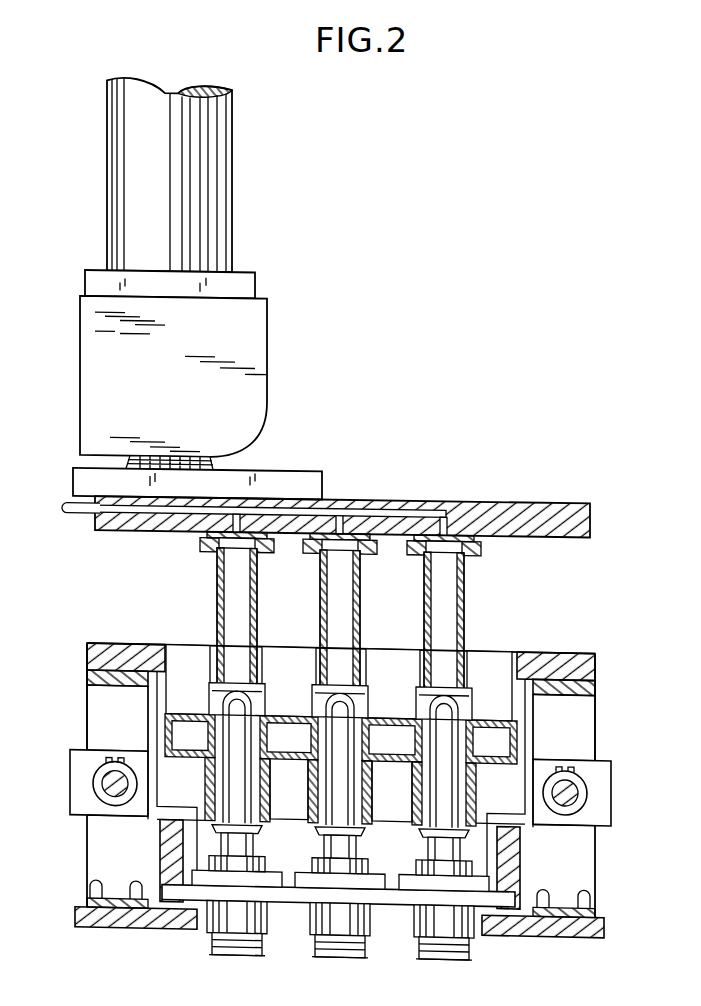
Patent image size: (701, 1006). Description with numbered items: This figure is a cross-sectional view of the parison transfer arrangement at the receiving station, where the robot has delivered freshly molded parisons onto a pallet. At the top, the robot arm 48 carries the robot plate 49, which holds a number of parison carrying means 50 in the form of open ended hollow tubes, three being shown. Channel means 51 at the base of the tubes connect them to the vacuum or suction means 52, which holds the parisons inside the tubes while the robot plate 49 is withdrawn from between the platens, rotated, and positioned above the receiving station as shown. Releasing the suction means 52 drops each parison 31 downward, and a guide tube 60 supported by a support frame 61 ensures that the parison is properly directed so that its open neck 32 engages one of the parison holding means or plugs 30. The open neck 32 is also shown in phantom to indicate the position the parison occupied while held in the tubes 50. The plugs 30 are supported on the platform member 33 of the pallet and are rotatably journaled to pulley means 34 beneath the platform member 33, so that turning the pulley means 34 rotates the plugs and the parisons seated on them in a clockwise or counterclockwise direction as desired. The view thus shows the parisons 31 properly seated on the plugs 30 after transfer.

The robot arm 48 is at (232, 183).
The robot plate 49 is at (590, 492).
The suction means 52 is at (72, 506).
The channel means 51 is at (205, 555).
The parison carrying means 50 is at (320, 586).
The support frame 61 is at (190, 658).
The parison 31 is at (262, 701).
The guide tube 60 is at (205, 790).
The open neck 32 is at (322, 838).
The parison holding means 30 is at (426, 837).
The platform member 33 is at (318, 870).
The pulley means 34 is at (419, 939).